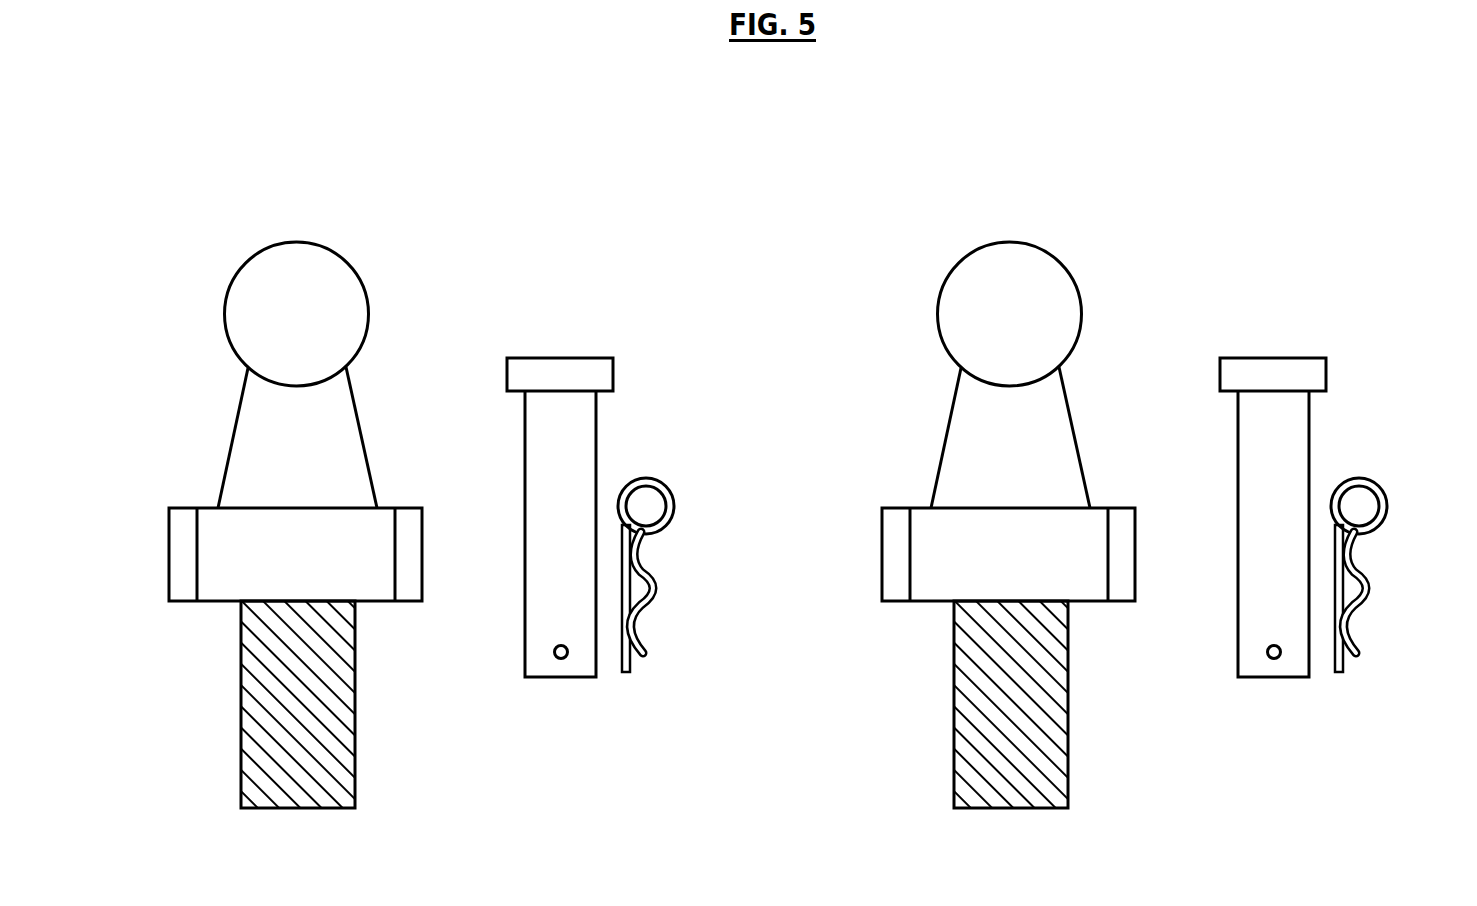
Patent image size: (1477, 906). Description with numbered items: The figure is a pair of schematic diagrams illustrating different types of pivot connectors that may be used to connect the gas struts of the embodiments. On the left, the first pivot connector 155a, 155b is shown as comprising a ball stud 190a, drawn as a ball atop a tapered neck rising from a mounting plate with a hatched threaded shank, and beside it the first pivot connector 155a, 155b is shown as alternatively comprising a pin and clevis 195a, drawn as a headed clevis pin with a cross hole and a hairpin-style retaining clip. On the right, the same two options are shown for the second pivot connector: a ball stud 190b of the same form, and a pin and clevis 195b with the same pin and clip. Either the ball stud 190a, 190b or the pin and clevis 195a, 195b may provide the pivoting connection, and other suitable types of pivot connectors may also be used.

The first pivot connector 155a is at (459, 232).
The first pivot connector 155b is at (1175, 232).
The ball stud 190a is at (222, 473).
The ball stud 190b is at (935, 473).
The pin and clevis 195a is at (628, 445).
The pin and clevis 195b is at (1340, 445).